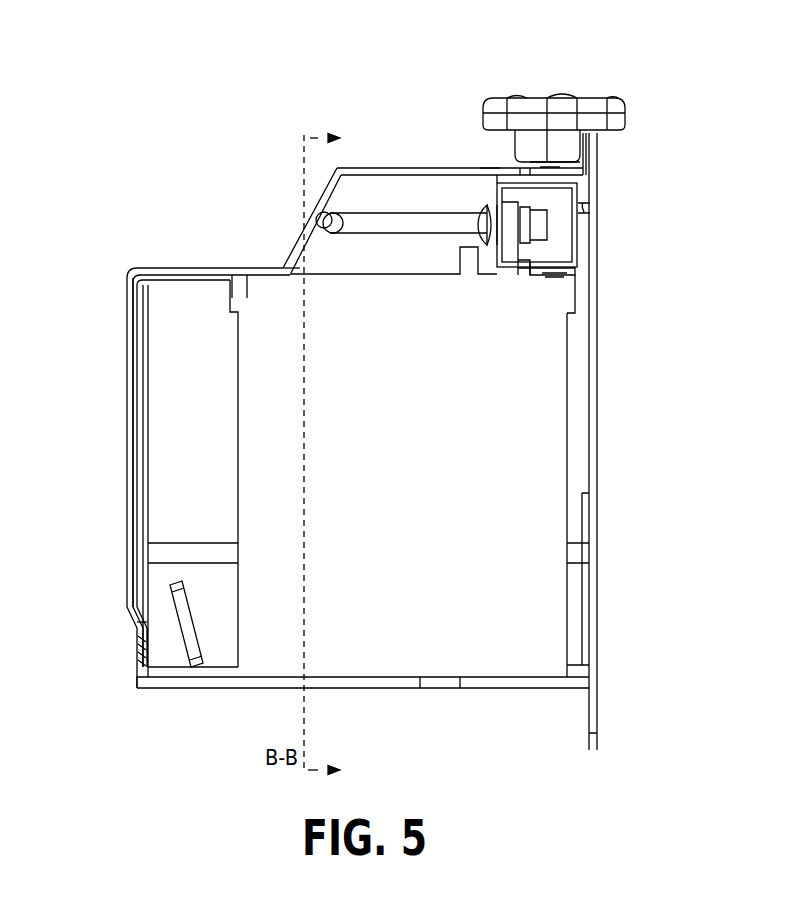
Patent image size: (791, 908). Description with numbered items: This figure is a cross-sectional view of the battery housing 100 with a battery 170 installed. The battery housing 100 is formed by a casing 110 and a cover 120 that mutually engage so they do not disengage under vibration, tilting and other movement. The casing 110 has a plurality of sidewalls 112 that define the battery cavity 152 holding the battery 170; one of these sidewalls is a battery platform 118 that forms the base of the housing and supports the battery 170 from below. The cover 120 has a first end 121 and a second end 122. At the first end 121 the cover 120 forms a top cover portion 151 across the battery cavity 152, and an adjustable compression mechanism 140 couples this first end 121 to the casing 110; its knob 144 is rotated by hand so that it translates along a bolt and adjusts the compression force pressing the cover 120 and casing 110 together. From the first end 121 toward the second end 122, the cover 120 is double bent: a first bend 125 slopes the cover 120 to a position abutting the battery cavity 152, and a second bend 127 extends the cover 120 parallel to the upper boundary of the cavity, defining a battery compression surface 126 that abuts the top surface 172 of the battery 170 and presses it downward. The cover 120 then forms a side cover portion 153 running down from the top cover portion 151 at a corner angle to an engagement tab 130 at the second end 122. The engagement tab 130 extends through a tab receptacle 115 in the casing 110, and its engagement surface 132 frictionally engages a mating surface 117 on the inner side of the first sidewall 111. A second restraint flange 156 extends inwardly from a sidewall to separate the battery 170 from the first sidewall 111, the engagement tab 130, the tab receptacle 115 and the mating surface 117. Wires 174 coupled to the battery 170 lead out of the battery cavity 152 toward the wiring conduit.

The battery housing 100 is at (145, 150).
The casing 110 is at (600, 338).
The first sidewall 111 is at (138, 667).
The plurality of sidewalls 112 is at (585, 682).
The tab receptacle 115 is at (137, 625).
The mating surface 117 is at (140, 650).
The battery platform 118 is at (292, 683).
The cover 120 is at (278, 242).
The first end 121 is at (470, 153).
The second end 122 is at (88, 550).
The first bend 125 is at (337, 168).
The battery compression surface 126 is at (265, 280).
The second bend 127 is at (282, 278).
The engagement tab 130 is at (120, 612).
The engagement surface 132 is at (138, 650).
The adjustable compression mechanism 140 is at (647, 112).
The knob 144 is at (542, 107).
The top cover portion 151 is at (358, 140).
The battery cavity 152 is at (542, 457).
The side cover portion 153 is at (127, 382).
The second restraint flange 156 is at (187, 597).
The battery 170 is at (255, 477).
The top surface 172 is at (247, 278).
The wires 174 is at (443, 215).